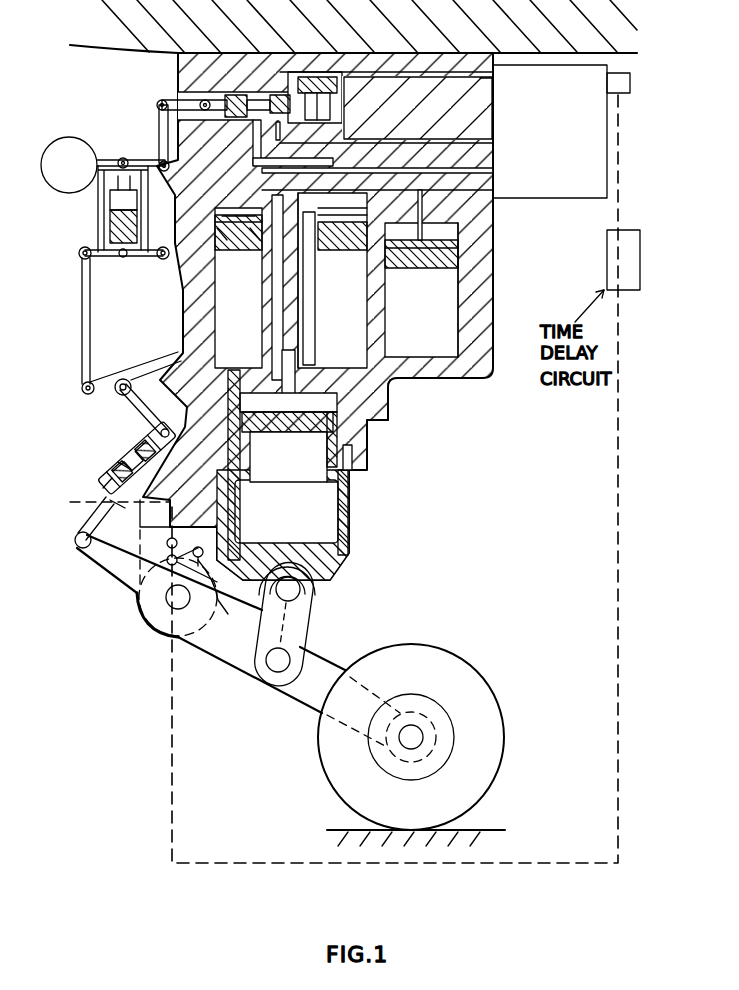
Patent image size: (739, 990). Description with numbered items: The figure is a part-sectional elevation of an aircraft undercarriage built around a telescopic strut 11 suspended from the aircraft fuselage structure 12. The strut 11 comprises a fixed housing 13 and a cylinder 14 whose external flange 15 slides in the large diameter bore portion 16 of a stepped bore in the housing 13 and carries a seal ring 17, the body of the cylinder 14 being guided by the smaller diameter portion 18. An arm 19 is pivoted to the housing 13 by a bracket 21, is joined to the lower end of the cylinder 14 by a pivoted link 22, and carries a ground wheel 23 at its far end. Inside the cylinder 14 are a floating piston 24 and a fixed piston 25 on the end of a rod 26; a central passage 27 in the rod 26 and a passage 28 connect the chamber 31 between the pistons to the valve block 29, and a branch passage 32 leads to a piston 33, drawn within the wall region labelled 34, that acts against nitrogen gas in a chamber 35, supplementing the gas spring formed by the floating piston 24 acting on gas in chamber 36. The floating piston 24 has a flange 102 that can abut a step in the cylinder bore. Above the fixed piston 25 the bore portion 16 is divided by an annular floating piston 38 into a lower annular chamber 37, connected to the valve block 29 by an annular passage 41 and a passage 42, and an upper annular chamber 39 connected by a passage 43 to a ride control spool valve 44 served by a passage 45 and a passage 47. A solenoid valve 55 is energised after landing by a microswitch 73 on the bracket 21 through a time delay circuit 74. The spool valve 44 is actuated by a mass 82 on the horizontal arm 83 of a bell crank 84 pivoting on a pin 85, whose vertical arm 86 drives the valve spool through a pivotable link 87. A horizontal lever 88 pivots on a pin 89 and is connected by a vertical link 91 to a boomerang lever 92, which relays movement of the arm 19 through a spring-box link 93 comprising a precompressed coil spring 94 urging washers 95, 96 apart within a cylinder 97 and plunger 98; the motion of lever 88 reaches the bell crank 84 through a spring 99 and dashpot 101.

The telescopic strut 11 is at (385, 425).
The aircraft fuselage structure 12 is at (110, 56).
The fixed housing 13 is at (388, 418).
The cylinder 14 is at (350, 518).
The external flange 15 is at (388, 398).
The large diameter bore portion 16 is at (372, 302).
The seal ring 17 is at (388, 386).
The smaller diameter portion 18 is at (352, 456).
The arm 19 is at (240, 672).
The bracket 21 is at (133, 588).
The pivoted link 22 is at (310, 622).
The ground wheel 23 is at (402, 654).
The floating piston 24 is at (300, 422).
The fixed piston 25 is at (328, 370).
The rod 26 is at (316, 256).
The central passage 27 is at (272, 320).
The passage 28 is at (493, 190).
The valve block 29 is at (550, 131).
The chamber 31 is at (282, 402).
The branch passage 32 is at (416, 256).
The piston 33 is at (404, 258).
The cylinder 34 is at (458, 305).
The chamber 35 is at (421, 290).
The chamber 36 is at (286, 511).
The annular chamber 37 is at (238, 288).
The annular floating piston 38 is at (244, 252).
The annular chamber 39 is at (234, 254).
The annular passage 41 is at (312, 286).
The passage 42 is at (493, 171).
The passage 43 is at (210, 172).
The spool valve 44 is at (272, 86).
The passage 45 is at (493, 80).
The passage 47 is at (472, 145).
The solenoid valve 55 is at (606, 82).
The microswitch 73 is at (218, 606).
The time delay circuit 74 is at (606, 252).
The mass 82 is at (74, 137).
The horizontal arm 83 is at (120, 156).
The bell crank 84 is at (140, 158).
The pin 85 is at (158, 140).
The vertical arm 86 is at (158, 100).
The pivotable link 87 is at (190, 104).
The lever 88 is at (93, 258).
The pin 89 is at (162, 259).
The vertical link 91 is at (90, 325).
The boomerang lever 92 is at (118, 372).
The spring-box link 93 is at (116, 465).
The coil spring 94 is at (110, 477).
The washer 95 is at (123, 502).
The washer 96 is at (145, 443).
The cylinder 97 is at (127, 453).
The plunger 98 is at (103, 517).
The spring 99 is at (100, 206).
The dashpot 101 is at (108, 232).
The flange 102 is at (332, 484).